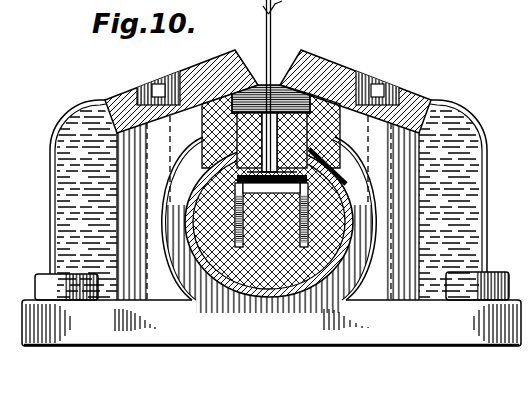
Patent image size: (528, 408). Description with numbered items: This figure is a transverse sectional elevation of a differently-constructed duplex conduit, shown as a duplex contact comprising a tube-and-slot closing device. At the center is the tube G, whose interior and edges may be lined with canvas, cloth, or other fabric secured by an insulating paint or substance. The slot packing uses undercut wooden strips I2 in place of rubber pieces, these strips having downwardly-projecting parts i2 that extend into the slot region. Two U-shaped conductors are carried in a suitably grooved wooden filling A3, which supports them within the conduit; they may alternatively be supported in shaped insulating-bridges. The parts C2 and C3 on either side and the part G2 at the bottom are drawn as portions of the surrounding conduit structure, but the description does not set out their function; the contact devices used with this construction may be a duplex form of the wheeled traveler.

The pole piece / magnet block C2 is at (327, 69).
The field coil C3 is at (408, 236).
The undercut wooden strips I2 is at (203, 134).
The downwardly-projecting parts i2 is at (340, 181).
The grooved wooden filling A3 is at (192, 296).
The tube G is at (297, 305).
The base G2 is at (271, 323).